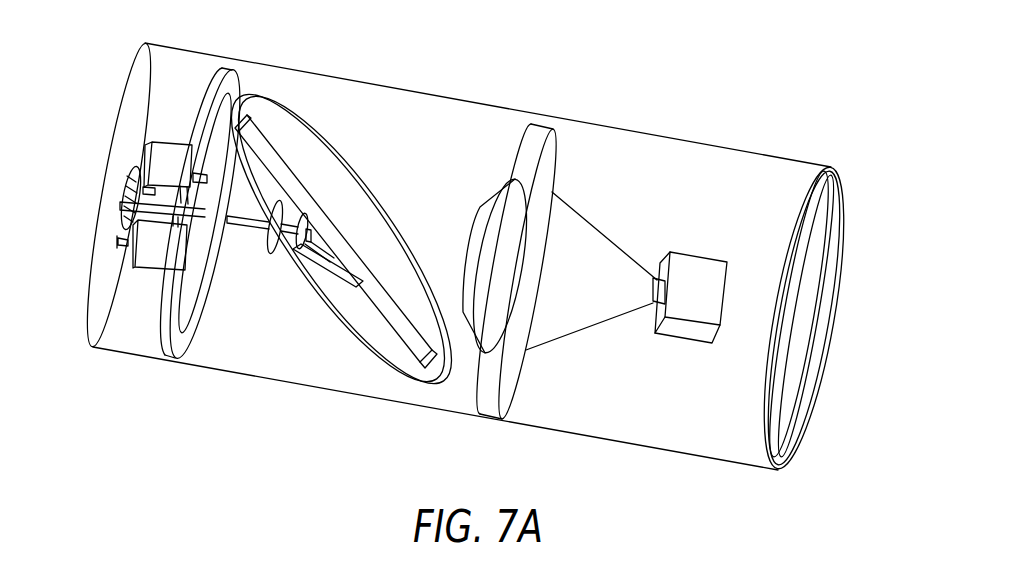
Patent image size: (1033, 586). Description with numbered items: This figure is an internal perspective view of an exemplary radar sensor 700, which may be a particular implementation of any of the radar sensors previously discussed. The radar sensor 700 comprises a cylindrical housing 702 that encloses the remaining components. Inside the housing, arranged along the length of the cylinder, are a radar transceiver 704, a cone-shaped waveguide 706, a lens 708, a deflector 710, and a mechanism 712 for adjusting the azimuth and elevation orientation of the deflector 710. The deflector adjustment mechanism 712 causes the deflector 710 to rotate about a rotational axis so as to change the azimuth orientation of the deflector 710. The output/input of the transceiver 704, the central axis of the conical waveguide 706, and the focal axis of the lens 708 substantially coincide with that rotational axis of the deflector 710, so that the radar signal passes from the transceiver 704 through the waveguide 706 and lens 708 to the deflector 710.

The radar sensor 700 is at (468, 255).
The cylindrical housing 702 is at (313, 386).
The radar transceiver 704 is at (706, 272).
The cone-shaped waveguide 706 is at (589, 292).
The lens 708 is at (512, 273).
The deflector 710 is at (379, 236).
The deflector adjustment mechanism 712 is at (141, 292).